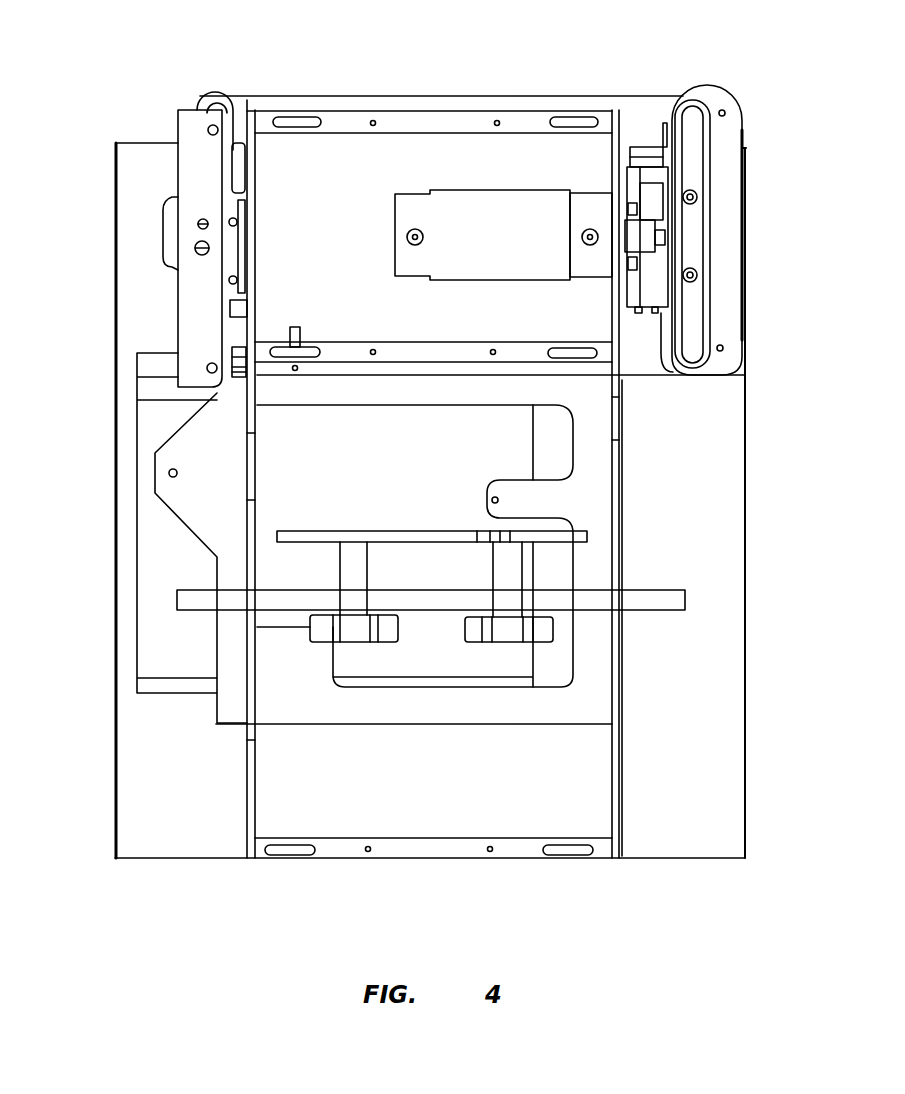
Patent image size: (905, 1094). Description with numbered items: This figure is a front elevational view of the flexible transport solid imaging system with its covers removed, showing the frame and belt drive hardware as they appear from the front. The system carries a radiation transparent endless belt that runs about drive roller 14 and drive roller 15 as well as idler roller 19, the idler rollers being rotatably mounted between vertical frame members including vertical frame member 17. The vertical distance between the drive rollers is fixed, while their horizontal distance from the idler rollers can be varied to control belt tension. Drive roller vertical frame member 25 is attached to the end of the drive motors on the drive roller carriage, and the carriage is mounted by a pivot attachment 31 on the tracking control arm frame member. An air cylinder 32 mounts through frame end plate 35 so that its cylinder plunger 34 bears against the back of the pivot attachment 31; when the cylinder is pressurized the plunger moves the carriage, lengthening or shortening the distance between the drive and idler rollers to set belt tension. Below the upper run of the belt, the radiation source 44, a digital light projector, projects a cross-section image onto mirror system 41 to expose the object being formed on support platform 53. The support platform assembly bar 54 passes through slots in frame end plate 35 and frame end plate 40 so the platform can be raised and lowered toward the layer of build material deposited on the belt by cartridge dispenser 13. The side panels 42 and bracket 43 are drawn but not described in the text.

The cartridge dispenser 13 is at (163, 222).
The drive roller 14 is at (683, 96).
The drive roller 15 is at (700, 362).
The vertical frame member 17 is at (177, 292).
The idler roller 19 is at (202, 96).
The drive roller vertical frame member 25 is at (733, 105).
The pivot attachment 31 is at (653, 280).
The air cylinder 32 is at (466, 244).
The cylinder plunger 34 is at (630, 240).
The frame end plate 35 is at (622, 812).
The frame end plate 40 is at (245, 818).
The mirror system 41 is at (284, 191).
The side panels 42 is at (113, 805).
The bracket 43 is at (163, 510).
The radiation source 44 is at (410, 667).
The support platform 53 is at (587, 537).
The support platform assembly bar 54 is at (647, 612).